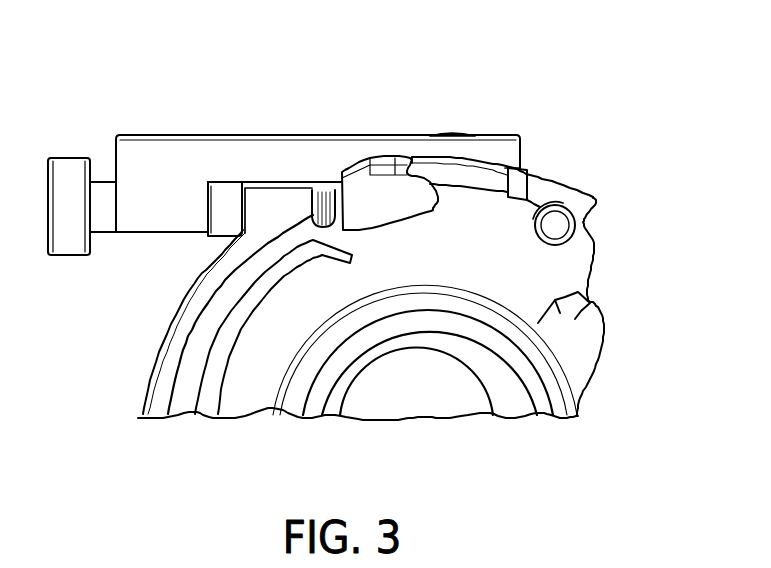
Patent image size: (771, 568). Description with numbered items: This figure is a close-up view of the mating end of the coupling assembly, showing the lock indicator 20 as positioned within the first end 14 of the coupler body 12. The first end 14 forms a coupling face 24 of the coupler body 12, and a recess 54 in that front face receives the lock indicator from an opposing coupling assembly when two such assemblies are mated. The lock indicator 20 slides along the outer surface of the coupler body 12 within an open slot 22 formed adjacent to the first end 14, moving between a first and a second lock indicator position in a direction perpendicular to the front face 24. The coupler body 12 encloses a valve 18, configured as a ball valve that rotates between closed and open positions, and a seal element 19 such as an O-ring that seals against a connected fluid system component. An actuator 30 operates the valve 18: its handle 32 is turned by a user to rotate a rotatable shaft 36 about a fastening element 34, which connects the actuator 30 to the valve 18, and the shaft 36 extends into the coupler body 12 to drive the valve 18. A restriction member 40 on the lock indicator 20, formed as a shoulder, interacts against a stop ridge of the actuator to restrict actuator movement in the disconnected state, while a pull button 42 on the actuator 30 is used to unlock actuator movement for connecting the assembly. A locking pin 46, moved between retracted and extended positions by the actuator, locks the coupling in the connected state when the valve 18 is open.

The coupler body 12 is at (582, 375).
The first end 14 is at (146, 390).
The valve 18 is at (423, 392).
The seal element 19 is at (313, 402).
The lock indicator 20 is at (388, 180).
The open slot 22 is at (338, 212).
The coupling face 24 is at (235, 387).
The actuator 30 is at (232, 125).
The handle 32 is at (288, 137).
The fastening element 34 is at (433, 134).
The rotatable shaft 36 is at (223, 220).
The restriction member 40 is at (445, 276).
The pull button 42 is at (72, 175).
The locking pin 46 is at (556, 232).
The recess 54 is at (535, 188).